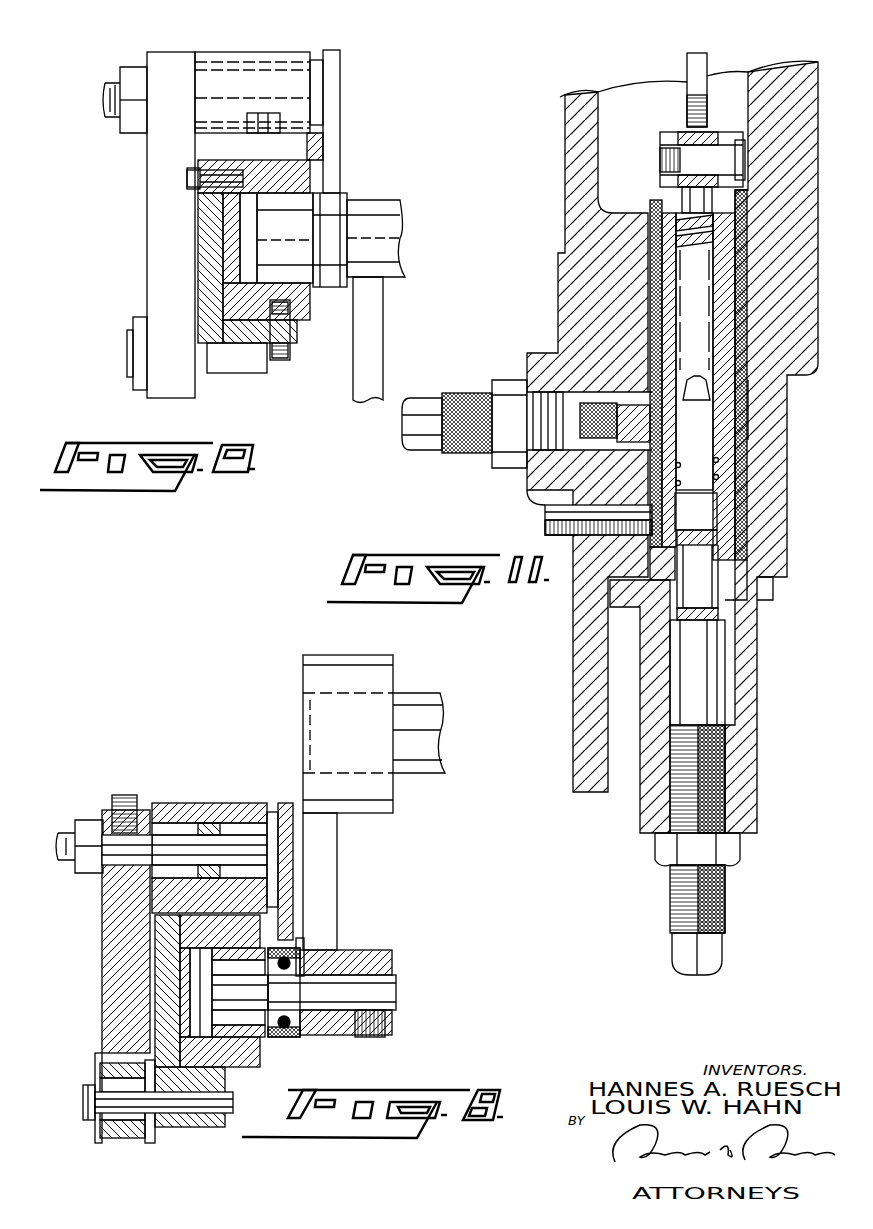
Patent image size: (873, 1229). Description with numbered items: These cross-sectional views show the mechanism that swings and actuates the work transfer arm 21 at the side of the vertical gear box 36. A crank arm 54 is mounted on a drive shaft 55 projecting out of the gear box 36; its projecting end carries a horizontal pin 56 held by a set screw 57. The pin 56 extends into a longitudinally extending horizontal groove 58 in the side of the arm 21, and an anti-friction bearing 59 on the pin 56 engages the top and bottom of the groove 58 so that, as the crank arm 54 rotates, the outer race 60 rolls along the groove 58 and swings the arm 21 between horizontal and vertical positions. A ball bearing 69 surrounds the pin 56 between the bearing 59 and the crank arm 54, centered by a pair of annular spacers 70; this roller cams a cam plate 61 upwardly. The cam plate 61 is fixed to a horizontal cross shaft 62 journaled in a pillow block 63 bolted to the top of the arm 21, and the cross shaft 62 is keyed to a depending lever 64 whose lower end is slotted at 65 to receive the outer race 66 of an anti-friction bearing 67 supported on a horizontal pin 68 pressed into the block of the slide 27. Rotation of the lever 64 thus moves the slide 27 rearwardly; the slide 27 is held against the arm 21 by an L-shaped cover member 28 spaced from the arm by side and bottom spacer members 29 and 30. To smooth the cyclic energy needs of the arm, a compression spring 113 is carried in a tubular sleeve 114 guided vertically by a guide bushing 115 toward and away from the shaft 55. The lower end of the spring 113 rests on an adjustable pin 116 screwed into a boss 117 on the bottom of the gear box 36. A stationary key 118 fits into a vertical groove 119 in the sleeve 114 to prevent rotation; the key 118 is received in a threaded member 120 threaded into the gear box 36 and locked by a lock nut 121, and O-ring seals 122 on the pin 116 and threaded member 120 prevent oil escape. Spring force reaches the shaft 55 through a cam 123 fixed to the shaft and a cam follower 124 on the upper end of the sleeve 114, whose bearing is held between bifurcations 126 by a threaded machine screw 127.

In FIG. 9, the arm 21 is at (313, 162).
In FIG. 8, the arm 21 is at (253, 1067).
In FIG. 9, the slide 27 is at (245, 345).
In FIG. 9, the cover member 28 is at (200, 270).
In FIG. 8, the cover member 28 is at (163, 1005).
In FIG. 9, the side spacer member 29 is at (195, 170).
In FIG. 8, the side spacer member 29 is at (137, 922).
In FIG. 9, the bottom spacer member 30 is at (290, 322).
In FIG. 11, the gear box 36 is at (565, 230).
In FIG. 9, the crank arm 54 is at (385, 310).
In FIG. 8, the crank arm 54 is at (337, 865).
In FIG. 8, the drive shaft 55 is at (433, 772).
In FIG. 9, the horizontal pin 56 is at (390, 210).
In FIG. 8, the horizontal pin 56 is at (380, 977).
In FIG. 8, the set screw 57 is at (387, 1035).
In FIG. 9, the horizontal groove 58 is at (240, 215).
In FIG. 8, the horizontal groove 58 is at (200, 955).
In FIG. 9, the anti-friction bearing 59 is at (294, 246).
In FIG. 8, the anti-friction bearing 59 is at (250, 1042).
In FIG. 8, the outer race 60 is at (258, 930).
In FIG. 9, the cam plate 61 is at (340, 101).
In FIG. 8, the cam plate 61 is at (287, 803).
In FIG. 8, the horizontal cross shaft 62 is at (215, 827).
In FIG. 9, the pillow block 63 is at (280, 52).
In FIG. 8, the pillow block 63 is at (185, 803).
In FIG. 9, the depending lever 64 is at (147, 201).
In FIG. 8, the depending lever 64 is at (102, 950).
In FIG. 8, the slot 65 is at (103, 1060).
In FIG. 8, the outer race 66 is at (117, 1140).
In FIG. 8, the anti-friction bearing 67 is at (138, 1148).
In FIG. 8, the horizontal pin 68 is at (197, 1124).
In FIG. 9, the ball bearing 69 is at (345, 190).
In FIG. 8, the ball bearing 69 is at (300, 942).
In FIG. 8, the annular spacers 70 is at (270, 1035).
In FIG. 11, the compression spring 113 is at (656, 215).
In FIG. 11, the tubular sleeve 114 is at (737, 378).
In FIG. 11, the guide bushing 115 is at (748, 445).
In FIG. 11, the adjustable pin 116 is at (720, 690).
In FIG. 11, the boss 117 is at (758, 765).
In FIG. 11, the stationary key 118 is at (648, 403).
In FIG. 11, the vertical groove 119 is at (560, 522).
In FIG. 11, the threaded member 120 is at (420, 452).
In FIG. 11, the lock nut 121 is at (508, 470).
In FIG. 11, the O-ring seals 122 is at (545, 462).
In FIG. 11, the cam 123 is at (708, 55).
In FIG. 11, the cam follower 124 is at (680, 132).
In FIG. 11, the bifurcations 126 is at (735, 130).
In FIG. 11, the threaded machine screw 127 is at (660, 160).